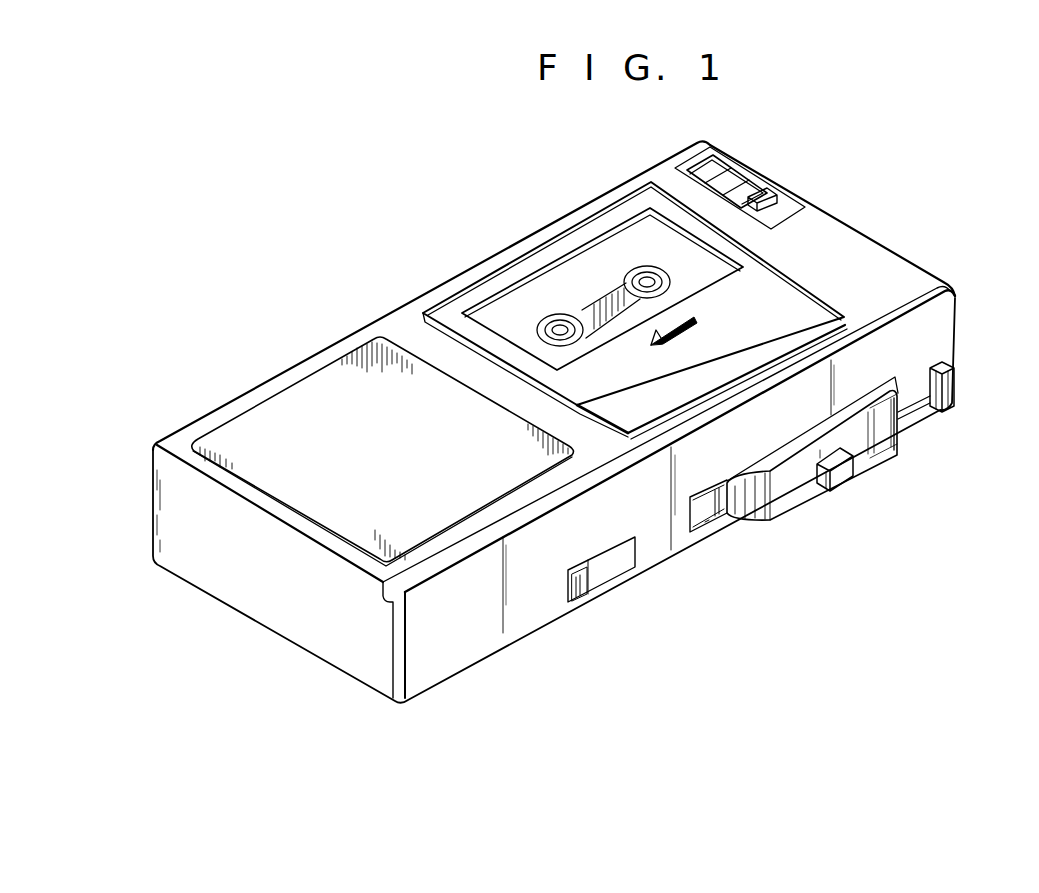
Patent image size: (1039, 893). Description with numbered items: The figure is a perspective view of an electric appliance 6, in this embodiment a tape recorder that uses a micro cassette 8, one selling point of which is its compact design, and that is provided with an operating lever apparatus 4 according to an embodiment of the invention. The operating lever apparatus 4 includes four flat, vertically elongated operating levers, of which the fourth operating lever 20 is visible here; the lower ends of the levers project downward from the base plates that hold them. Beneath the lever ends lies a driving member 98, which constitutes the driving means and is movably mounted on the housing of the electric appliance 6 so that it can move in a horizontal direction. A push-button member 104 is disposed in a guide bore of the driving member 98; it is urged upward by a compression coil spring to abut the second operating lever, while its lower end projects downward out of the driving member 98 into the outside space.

The operating lever apparatus 4 is at (805, 507).
The electric appliance 6 is at (878, 262).
The micro cassette 8 is at (584, 258).
The fourth operating lever 20 is at (947, 408).
The driving member 98 is at (882, 450).
The push-button member 104 is at (843, 480).